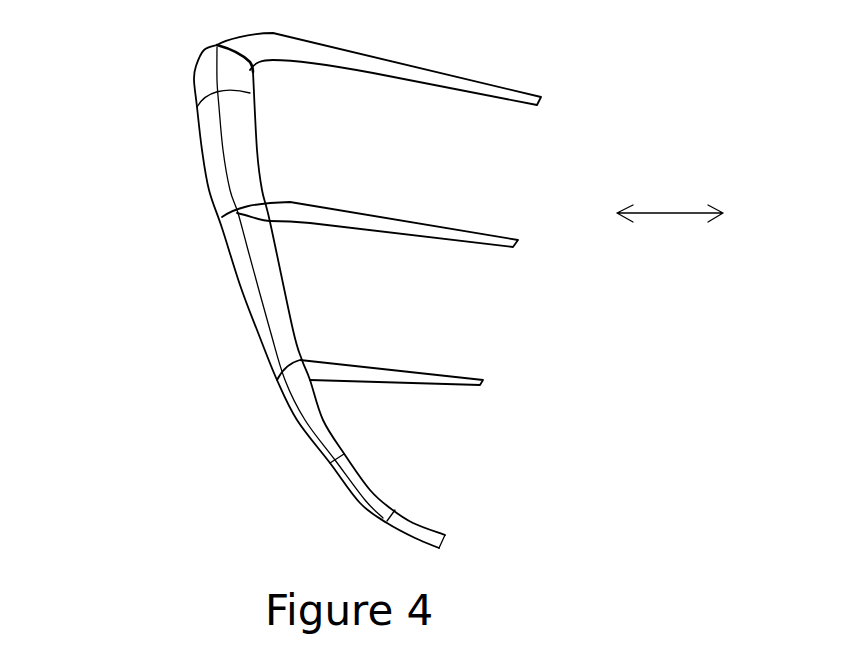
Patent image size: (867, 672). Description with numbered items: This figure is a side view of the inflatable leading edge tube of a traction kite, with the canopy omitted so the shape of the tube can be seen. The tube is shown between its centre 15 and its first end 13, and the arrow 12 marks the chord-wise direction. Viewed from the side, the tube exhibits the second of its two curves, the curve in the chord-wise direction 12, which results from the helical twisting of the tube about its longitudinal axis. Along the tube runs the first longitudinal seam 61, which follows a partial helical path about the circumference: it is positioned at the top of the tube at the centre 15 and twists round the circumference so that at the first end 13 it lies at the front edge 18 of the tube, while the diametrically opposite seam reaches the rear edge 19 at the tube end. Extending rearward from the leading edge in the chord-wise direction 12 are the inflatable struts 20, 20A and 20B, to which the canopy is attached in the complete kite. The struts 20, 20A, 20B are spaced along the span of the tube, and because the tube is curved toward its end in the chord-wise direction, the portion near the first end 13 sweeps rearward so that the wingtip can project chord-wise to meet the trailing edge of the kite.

The chord-wise direction 12 is at (670, 197).
The first end of the tube 13 is at (446, 543).
The centre of the tube 15 is at (210, 43).
The front edge of the tube 18 is at (196, 196).
The rear edge of the tube 19 is at (288, 296).
The inflatable strut 20 is at (358, 73).
The inflatable strut 20A is at (437, 240).
The inflatable strut 20B is at (412, 382).
The first longitudinal seam 61 is at (244, 249).